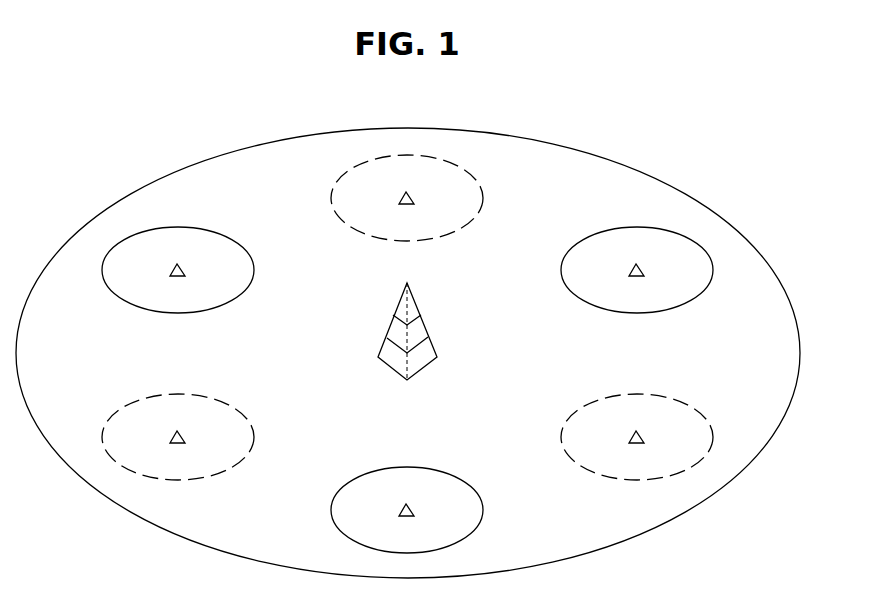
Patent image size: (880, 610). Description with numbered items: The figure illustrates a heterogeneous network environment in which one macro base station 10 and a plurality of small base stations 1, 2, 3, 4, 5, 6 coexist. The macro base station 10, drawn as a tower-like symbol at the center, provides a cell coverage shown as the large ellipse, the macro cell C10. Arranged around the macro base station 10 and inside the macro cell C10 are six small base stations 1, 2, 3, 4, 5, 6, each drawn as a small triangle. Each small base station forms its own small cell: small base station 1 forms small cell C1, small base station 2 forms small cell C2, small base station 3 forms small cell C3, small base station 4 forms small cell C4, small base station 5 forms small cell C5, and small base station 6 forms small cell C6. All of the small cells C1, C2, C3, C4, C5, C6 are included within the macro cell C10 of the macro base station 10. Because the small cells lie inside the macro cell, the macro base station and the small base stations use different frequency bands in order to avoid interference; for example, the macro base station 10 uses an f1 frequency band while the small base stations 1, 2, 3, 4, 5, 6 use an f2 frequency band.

The macro cell C10 is at (583, 150).
The macro base station 10 is at (422, 322).
The small cell C1 is at (176, 227).
The small cell C2 is at (176, 394).
The small cell C3 is at (405, 467).
The small cell C4 is at (635, 394).
The small cell C5 is at (635, 227).
The small cell C6 is at (405, 155).
The small base station 1 is at (184, 270).
The small base station 2 is at (184, 437).
The small base station 3 is at (413, 510).
The small base station 4 is at (643, 437).
The small base station 5 is at (643, 270).
The small base station 6 is at (413, 198).